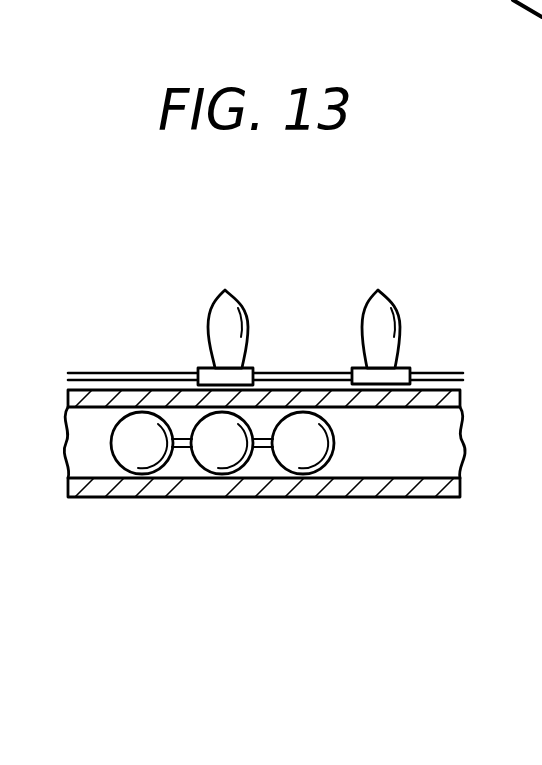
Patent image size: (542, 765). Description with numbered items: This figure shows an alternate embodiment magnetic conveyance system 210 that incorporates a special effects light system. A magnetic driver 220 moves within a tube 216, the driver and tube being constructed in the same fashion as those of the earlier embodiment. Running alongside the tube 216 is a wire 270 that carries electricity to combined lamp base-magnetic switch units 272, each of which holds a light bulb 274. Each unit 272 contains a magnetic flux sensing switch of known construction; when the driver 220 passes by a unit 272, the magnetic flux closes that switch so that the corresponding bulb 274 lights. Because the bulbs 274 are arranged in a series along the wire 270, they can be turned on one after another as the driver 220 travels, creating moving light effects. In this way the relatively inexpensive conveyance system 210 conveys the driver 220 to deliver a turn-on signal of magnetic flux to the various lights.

The magnetic conveyance system 210 is at (324, 293).
The tube 216 is at (330, 497).
The magnetic driver 220 is at (197, 468).
The wire 270 is at (143, 373).
The combined lamp base-magnetic switch unit 272 is at (198, 368).
The light bulb 274 is at (219, 290).